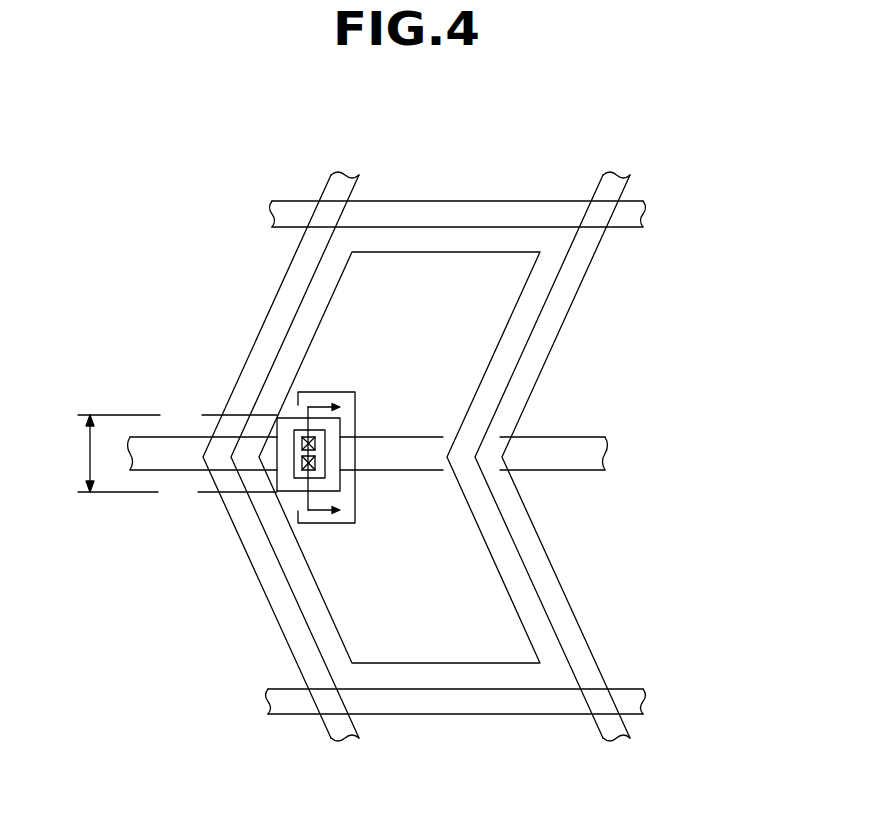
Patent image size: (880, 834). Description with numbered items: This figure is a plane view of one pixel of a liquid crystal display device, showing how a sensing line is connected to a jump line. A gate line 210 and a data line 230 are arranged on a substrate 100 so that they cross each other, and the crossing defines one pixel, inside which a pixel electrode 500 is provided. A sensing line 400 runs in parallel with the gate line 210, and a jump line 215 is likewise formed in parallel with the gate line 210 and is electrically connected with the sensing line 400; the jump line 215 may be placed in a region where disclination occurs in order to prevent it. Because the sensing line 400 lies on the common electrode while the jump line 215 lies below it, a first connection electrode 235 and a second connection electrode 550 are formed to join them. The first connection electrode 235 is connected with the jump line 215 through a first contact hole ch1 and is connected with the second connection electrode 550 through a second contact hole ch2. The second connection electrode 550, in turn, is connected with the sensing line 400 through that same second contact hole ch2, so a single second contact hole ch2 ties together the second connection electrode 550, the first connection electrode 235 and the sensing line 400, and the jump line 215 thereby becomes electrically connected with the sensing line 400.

The substrate 100 is at (472, 435).
The gate line 210 is at (528, 220).
The jump line 215 is at (587, 457).
The data line 230 is at (562, 292).
The first connection electrode 235 is at (294, 456).
The sensing line 400 is at (183, 445).
The pixel electrode 500 is at (427, 252).
The second connection electrode 550 is at (254, 437).
The first contact hole ch1 is at (296, 434).
The second contact hole ch2 is at (296, 476).